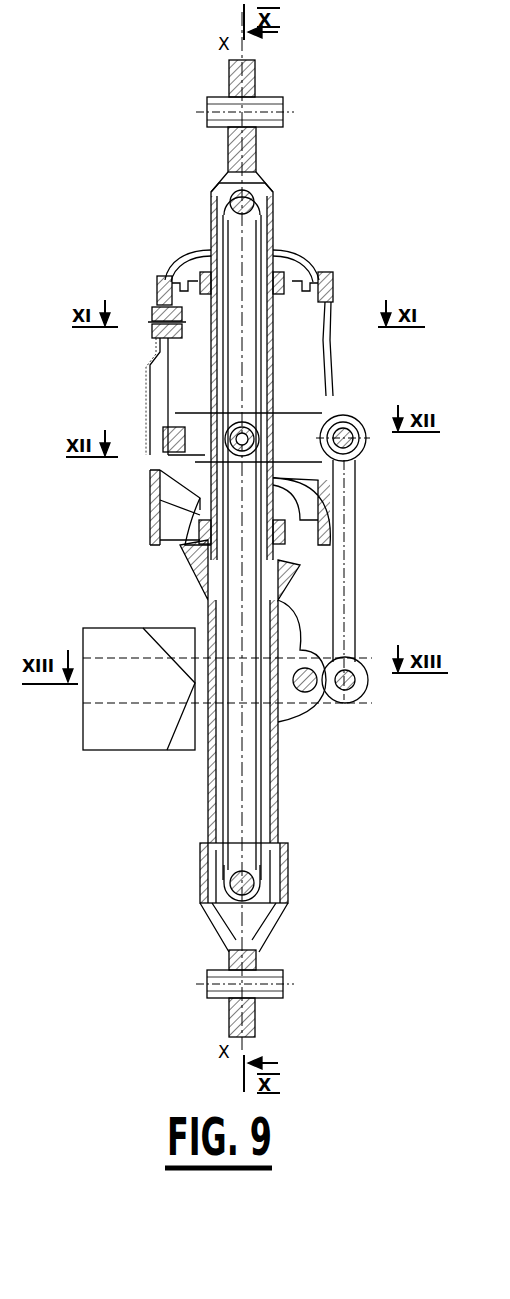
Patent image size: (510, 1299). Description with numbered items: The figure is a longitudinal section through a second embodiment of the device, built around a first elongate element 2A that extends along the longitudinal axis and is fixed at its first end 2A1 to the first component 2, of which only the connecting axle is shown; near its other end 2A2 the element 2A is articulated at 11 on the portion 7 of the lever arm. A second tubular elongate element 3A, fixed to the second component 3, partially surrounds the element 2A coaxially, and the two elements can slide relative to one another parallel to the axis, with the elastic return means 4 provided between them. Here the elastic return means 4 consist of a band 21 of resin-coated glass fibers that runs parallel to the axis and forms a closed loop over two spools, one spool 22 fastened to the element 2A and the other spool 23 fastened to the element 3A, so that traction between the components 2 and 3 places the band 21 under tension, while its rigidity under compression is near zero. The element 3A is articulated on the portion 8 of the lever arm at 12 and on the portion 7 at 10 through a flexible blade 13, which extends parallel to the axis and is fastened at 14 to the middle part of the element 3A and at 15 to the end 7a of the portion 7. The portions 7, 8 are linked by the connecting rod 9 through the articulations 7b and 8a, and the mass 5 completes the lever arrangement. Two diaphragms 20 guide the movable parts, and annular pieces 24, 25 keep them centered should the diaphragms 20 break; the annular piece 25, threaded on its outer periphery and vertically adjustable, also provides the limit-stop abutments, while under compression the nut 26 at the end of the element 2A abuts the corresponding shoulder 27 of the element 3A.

The first component 2 is at (272, 105).
The first end of the first element 2A1 is at (232, 158).
The spool 22 is at (265, 197).
The first elongate element 2A is at (274, 232).
The annular piece 24 is at (200, 262).
The elastic return means 4 is at (274, 361).
The diaphragms 20 is at (182, 266).
The fastening of the flexible blade to element 3A 14 is at (158, 316).
The flexible blade 13 is at (160, 370).
The articulation 10 is at (175, 411).
The articulation 11 is at (235, 428).
The portion of the lever arm 7 is at (288, 410).
The articulation 7b is at (352, 418).
The fastening of the flexible blade to end 7a 15 is at (165, 447).
The end of the portion 7 7a is at (168, 508).
The end of the first element 2A2 is at (330, 522).
The nut 26 is at (197, 538).
The annular piece 25 is at (300, 540).
The band 21 is at (205, 578).
The shoulder 27 is at (295, 578).
The connecting rod 9 is at (357, 628).
The mass 5 is at (104, 748).
The articulation 12 is at (302, 695).
The articulation 8a is at (352, 696).
The portion of the lever arm 8 is at (207, 742).
The second tubular elongate element 3A is at (280, 736).
The spool 23 is at (232, 878).
The second component 3 is at (212, 975).